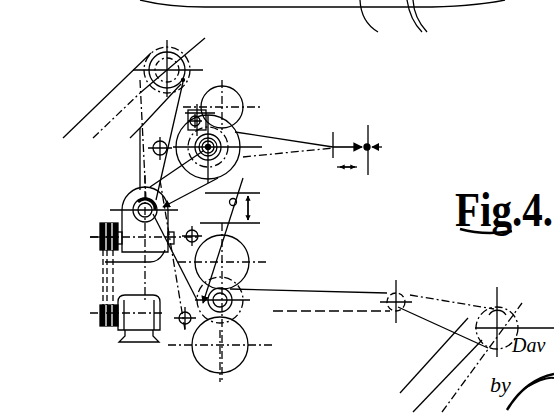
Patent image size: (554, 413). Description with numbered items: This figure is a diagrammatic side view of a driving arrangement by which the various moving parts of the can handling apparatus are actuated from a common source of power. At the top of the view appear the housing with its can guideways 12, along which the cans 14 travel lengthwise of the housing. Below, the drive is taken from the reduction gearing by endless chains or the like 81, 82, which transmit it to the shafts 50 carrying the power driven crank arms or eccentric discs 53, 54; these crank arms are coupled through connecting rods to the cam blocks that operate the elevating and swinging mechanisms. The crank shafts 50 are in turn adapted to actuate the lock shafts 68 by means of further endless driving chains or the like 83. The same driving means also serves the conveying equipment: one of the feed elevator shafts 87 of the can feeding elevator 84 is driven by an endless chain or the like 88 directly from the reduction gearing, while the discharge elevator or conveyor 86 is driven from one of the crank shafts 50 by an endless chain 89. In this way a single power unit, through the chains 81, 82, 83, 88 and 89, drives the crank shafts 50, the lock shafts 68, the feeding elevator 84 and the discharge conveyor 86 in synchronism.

The can guideways 12 is at (426, 19).
The cans 14 is at (380, 20).
The shafts 50 is at (225, 152).
The crank arm or eccentric disc 53 is at (182, 294).
The crank arm or eccentric disc 54 is at (222, 145).
The lock shafts 68 is at (238, 96).
The endless chain 81 is at (105, 262).
The endless chain 82 is at (140, 178).
The endless driving chain 83 is at (238, 135).
The can feeding elevator 84 is at (123, 79).
The discharge elevator or conveyor 86 is at (422, 366).
The feed elevator shaft 87 is at (167, 69).
The endless chain 88 is at (140, 128).
The endless chain 89 is at (349, 312).